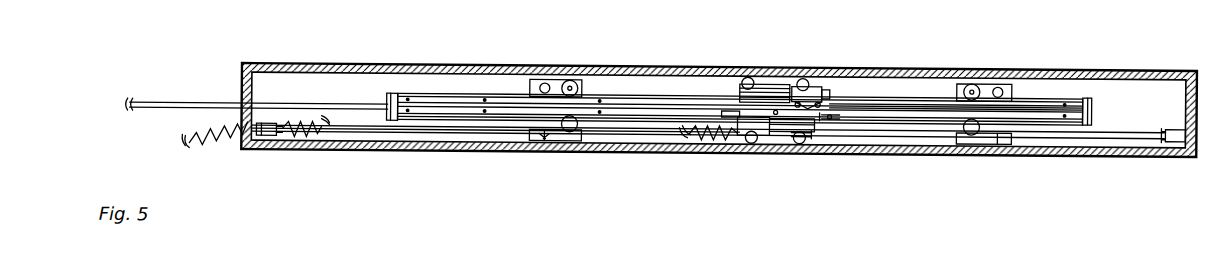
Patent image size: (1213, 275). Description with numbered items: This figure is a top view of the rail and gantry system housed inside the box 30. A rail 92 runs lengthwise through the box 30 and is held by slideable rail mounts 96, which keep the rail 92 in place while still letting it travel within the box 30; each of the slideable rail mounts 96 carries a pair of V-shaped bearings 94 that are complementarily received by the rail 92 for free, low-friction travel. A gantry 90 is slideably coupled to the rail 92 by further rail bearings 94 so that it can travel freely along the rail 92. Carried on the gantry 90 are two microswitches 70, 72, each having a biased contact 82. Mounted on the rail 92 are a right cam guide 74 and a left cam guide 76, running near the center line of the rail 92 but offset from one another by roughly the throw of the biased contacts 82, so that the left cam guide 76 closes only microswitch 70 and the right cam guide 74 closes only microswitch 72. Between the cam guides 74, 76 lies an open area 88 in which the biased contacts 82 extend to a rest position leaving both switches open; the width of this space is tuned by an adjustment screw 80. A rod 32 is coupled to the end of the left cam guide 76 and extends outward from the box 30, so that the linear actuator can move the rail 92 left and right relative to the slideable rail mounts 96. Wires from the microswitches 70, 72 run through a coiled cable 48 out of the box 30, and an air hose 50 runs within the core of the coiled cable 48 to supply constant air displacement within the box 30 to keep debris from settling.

The box 30 is at (356, 85).
The rod 32 is at (167, 102).
The coiled cable 48 is at (187, 135).
The air hose 50 is at (353, 126).
The microswitch 70 is at (748, 126).
The microswitch 72 is at (808, 85).
The right cam guide 74 is at (917, 97).
The left cam guide 76 is at (658, 104).
The adjustment screw 80 is at (822, 117).
The biased contact 82 is at (805, 135).
The open area 88 is at (775, 108).
The gantry 90 is at (781, 82).
The rail 92 is at (1068, 100).
The V-shaped bearings 94 is at (748, 74).
The slideable rail mounts 96 is at (572, 77).